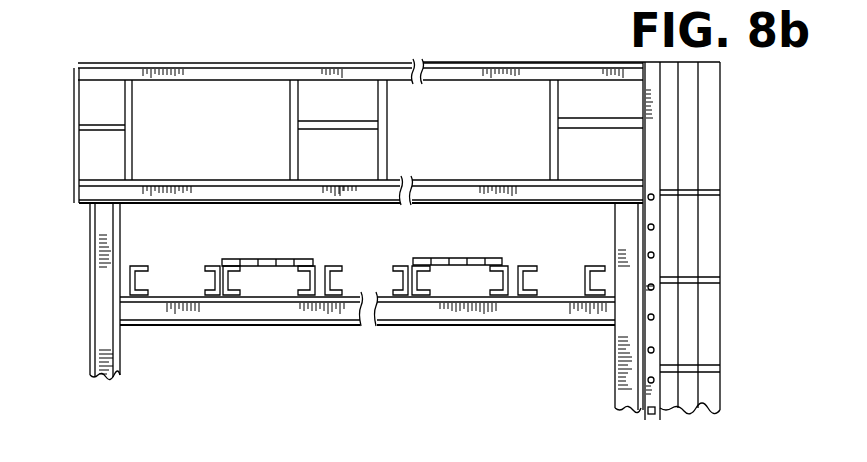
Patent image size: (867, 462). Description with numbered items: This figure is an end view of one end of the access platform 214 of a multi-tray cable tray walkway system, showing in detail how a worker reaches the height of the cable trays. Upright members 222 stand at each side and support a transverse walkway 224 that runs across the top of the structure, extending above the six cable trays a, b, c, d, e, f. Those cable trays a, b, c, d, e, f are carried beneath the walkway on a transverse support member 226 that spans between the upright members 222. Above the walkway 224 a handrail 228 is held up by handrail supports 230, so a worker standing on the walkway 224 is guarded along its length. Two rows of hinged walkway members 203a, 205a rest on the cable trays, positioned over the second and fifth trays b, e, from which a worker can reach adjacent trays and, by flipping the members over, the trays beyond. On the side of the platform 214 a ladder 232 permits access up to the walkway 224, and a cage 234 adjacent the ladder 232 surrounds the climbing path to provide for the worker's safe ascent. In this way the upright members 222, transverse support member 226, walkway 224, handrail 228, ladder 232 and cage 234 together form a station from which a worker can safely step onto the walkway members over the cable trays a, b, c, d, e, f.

The access platform 214 is at (259, 63).
The handrail 228 is at (541, 62).
The handrail supports 230 is at (133, 110).
The transverse walkway 224 is at (324, 200).
The upright members 222 is at (95, 240).
The transverse support member 226 is at (157, 313).
The row of hinged walkway members 203a is at (257, 259).
The row of hinged walkway members 205a is at (457, 259).
The ladder 232 is at (657, 399).
The cage 234 is at (721, 252).
The cable tray a is at (130, 284).
The cable tray b is at (246, 293).
The cable tray c is at (331, 293).
The cable tray d is at (404, 282).
The cable tray e is at (494, 282).
The cable tray f is at (590, 282).